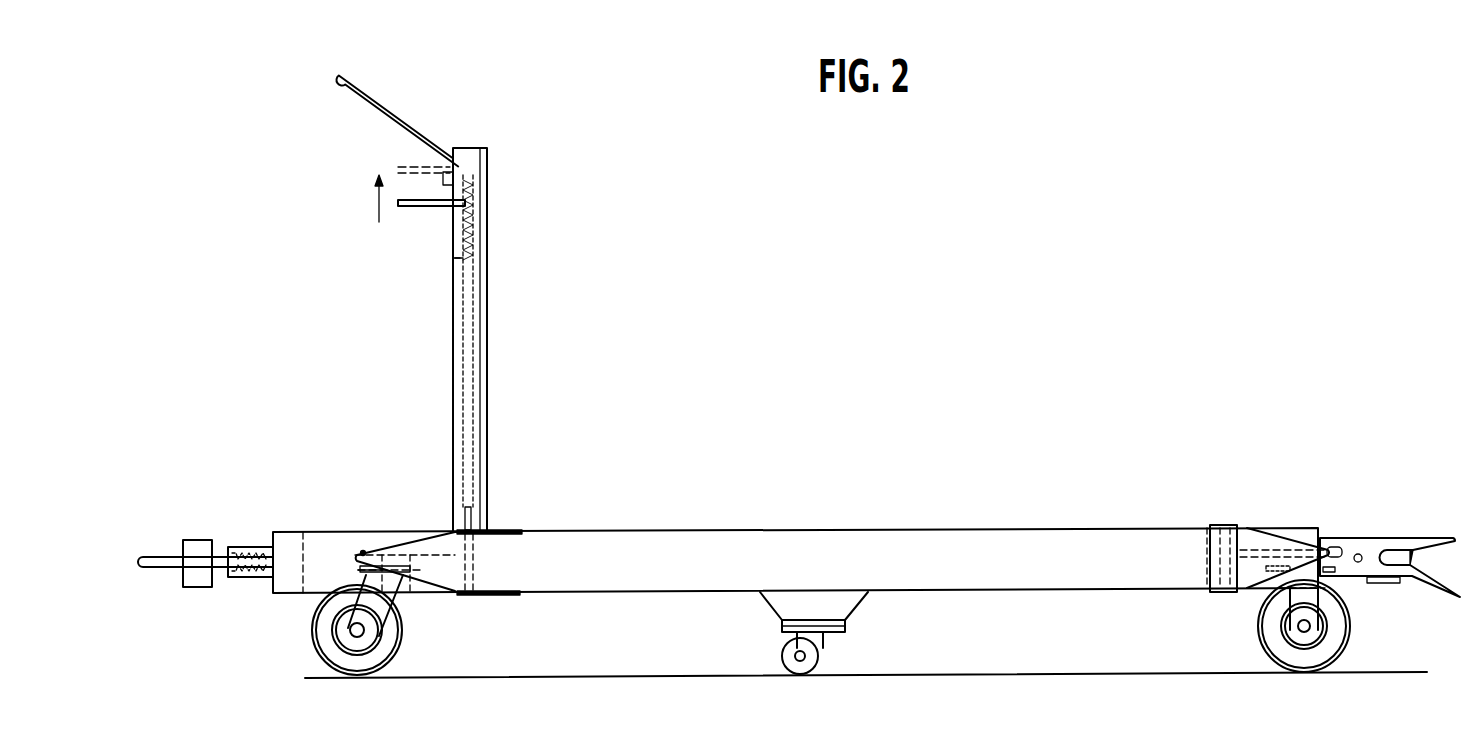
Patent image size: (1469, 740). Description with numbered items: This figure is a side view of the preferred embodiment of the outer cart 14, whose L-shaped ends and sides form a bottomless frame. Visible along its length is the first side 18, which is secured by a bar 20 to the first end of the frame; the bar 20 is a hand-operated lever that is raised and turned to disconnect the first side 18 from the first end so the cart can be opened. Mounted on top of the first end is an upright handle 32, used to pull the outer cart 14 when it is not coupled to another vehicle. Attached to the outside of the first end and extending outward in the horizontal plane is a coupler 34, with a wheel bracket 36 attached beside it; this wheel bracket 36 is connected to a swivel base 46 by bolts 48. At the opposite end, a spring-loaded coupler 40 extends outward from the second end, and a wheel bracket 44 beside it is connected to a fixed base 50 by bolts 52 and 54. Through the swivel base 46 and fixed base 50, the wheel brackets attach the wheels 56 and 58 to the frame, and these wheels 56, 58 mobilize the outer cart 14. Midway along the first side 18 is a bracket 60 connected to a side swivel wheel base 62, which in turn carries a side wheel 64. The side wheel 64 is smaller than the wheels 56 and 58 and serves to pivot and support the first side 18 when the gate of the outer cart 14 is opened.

The outer cart 14 is at (1030, 285).
The first side 18 is at (997, 535).
The bar 20 is at (428, 205).
The upright handle 32 is at (395, 101).
The coupler 34 is at (170, 557).
The wheel bracket 36 is at (432, 538).
The spring-loaded coupler 40 is at (1405, 545).
The wheel bracket 44 is at (1250, 540).
The swivel base 46 is at (393, 600).
The bolts 48 is at (397, 531).
The fixed base 50 is at (1345, 592).
The bolt 52 is at (1262, 590).
The bolt 54 is at (1335, 548).
The wheel 56 is at (312, 642).
The wheel 58 is at (1350, 652).
The bracket 60 is at (777, 606).
The side swivel wheel base 62 is at (822, 642).
The side wheel 64 is at (782, 655).